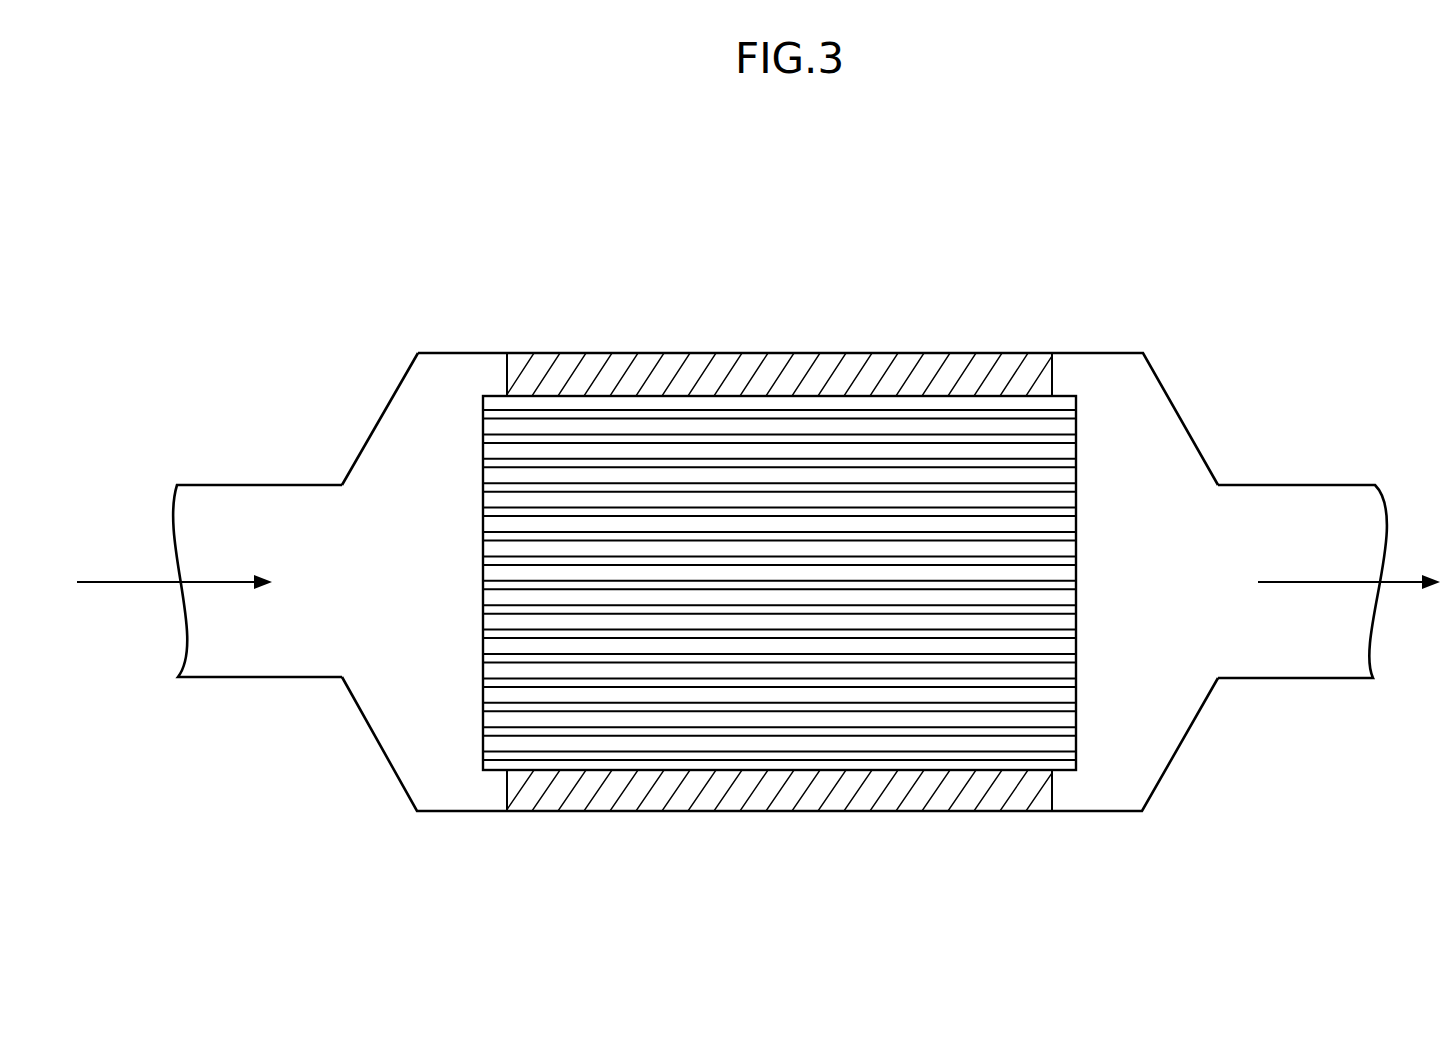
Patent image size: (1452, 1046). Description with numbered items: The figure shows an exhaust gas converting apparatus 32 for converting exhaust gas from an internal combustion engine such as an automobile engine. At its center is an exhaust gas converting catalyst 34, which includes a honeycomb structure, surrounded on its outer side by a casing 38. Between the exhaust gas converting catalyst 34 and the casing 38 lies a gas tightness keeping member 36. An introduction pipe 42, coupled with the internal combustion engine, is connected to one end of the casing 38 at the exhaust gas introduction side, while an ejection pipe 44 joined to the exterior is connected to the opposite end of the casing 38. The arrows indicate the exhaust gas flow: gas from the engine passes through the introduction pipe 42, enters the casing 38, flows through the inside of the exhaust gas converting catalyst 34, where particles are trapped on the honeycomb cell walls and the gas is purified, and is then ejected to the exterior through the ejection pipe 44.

The exhaust gas converting apparatus 32 is at (856, 308).
The exhaust gas converting catalyst 34 is at (1085, 460).
The gas tightness keeping member 36 is at (600, 352).
The casing 38 is at (462, 352).
The introduction pipe 42 is at (222, 485).
The ejection pipe 44 is at (1297, 485).